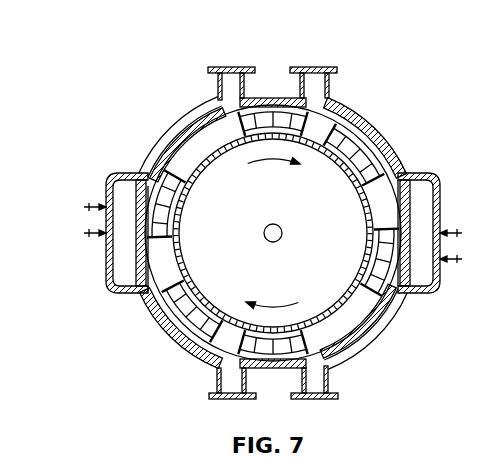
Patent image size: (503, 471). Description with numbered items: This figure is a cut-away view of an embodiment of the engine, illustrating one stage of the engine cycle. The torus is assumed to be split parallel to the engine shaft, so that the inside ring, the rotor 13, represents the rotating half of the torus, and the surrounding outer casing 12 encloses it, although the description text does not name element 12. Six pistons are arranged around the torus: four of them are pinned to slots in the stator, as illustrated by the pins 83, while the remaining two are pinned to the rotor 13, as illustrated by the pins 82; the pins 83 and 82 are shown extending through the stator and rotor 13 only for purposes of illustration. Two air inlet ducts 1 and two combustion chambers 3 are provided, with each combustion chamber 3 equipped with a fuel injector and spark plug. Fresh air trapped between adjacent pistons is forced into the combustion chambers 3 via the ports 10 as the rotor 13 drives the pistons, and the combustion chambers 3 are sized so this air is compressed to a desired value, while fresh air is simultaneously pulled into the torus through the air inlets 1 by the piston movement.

The air inlet duct 1 is at (313, 88).
The combustion chamber 3 is at (435, 285).
The port 10 is at (410, 210).
The outer casing ring 12 is at (387, 141).
The rotor 13 is at (214, 179).
The pin 82 is at (338, 170).
The pin 83 is at (270, 98).